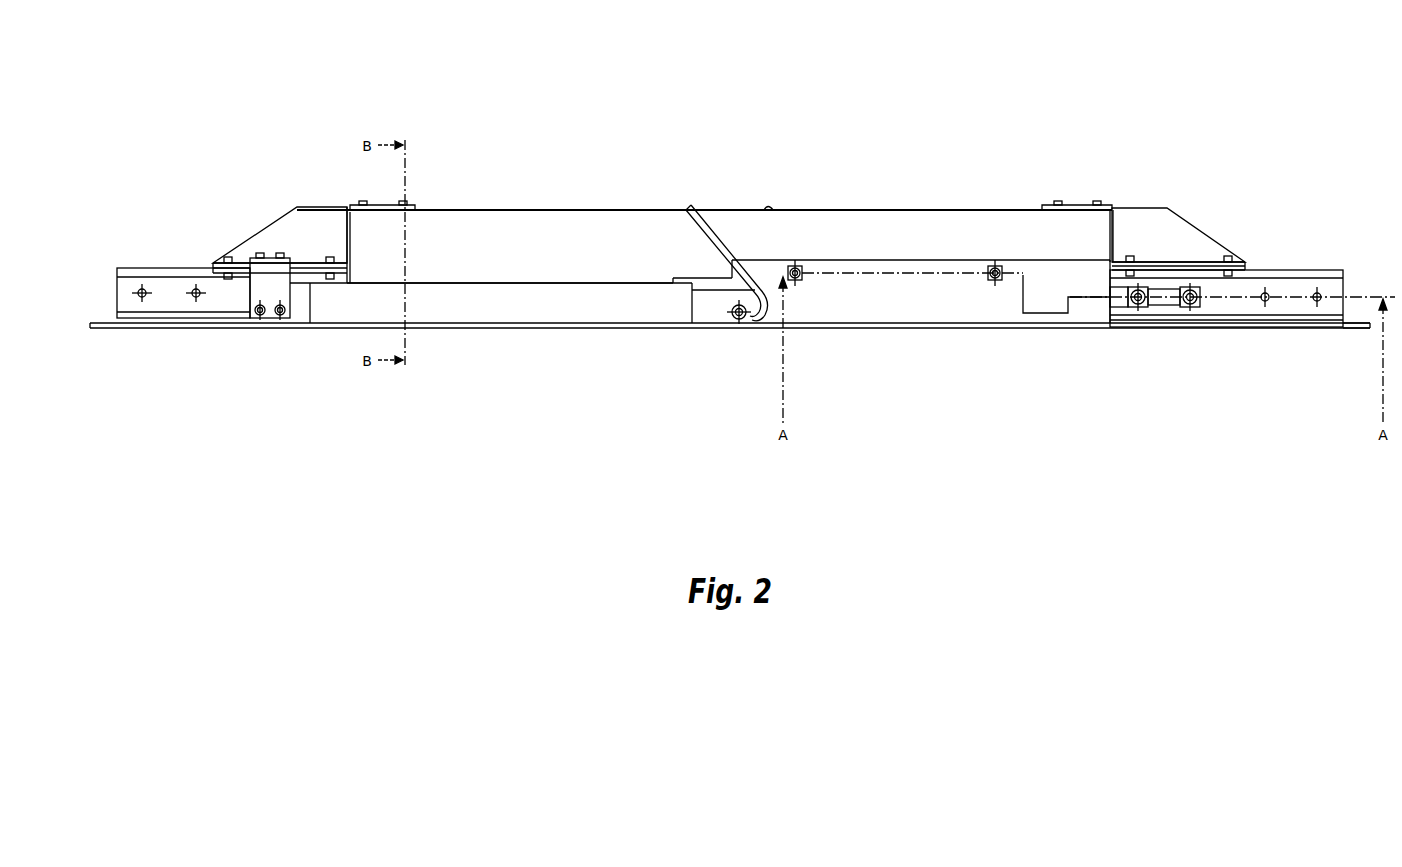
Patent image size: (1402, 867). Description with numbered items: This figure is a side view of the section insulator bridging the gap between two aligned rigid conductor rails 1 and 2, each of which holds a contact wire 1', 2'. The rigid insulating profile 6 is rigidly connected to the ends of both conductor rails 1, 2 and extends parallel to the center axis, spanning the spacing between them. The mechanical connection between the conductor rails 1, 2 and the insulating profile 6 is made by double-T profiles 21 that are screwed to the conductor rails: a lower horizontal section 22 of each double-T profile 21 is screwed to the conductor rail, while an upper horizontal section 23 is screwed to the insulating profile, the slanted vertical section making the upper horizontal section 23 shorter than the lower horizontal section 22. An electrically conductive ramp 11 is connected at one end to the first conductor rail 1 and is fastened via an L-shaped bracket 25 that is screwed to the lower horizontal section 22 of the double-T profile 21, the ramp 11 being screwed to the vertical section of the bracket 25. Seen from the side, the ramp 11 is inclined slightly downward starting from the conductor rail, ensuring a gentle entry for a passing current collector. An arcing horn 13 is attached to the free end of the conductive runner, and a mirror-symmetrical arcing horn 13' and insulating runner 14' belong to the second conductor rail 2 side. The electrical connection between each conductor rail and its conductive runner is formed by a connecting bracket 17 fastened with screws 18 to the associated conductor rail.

The conductor rail 1 is at (183, 182).
The contact wire 1' is at (729, 187).
The conductor rail 2 is at (1226, 186).
The contact wire 2' is at (1362, 187).
The insulating profile 6 is at (565, 246).
The electrically conductive ramp 11 is at (522, 306).
The arcing horn 13 is at (721, 185).
The arcing horn 13' is at (786, 128).
The insulating runner 14' is at (901, 389).
The connecting bracket 17 is at (1161, 302).
The screws 18 is at (1129, 312).
The double-T profile 21 is at (327, 233).
The lower horizontal section 22 is at (1188, 262).
The upper horizontal section 23 is at (380, 206).
The L-shaped bracket 25 is at (270, 290).